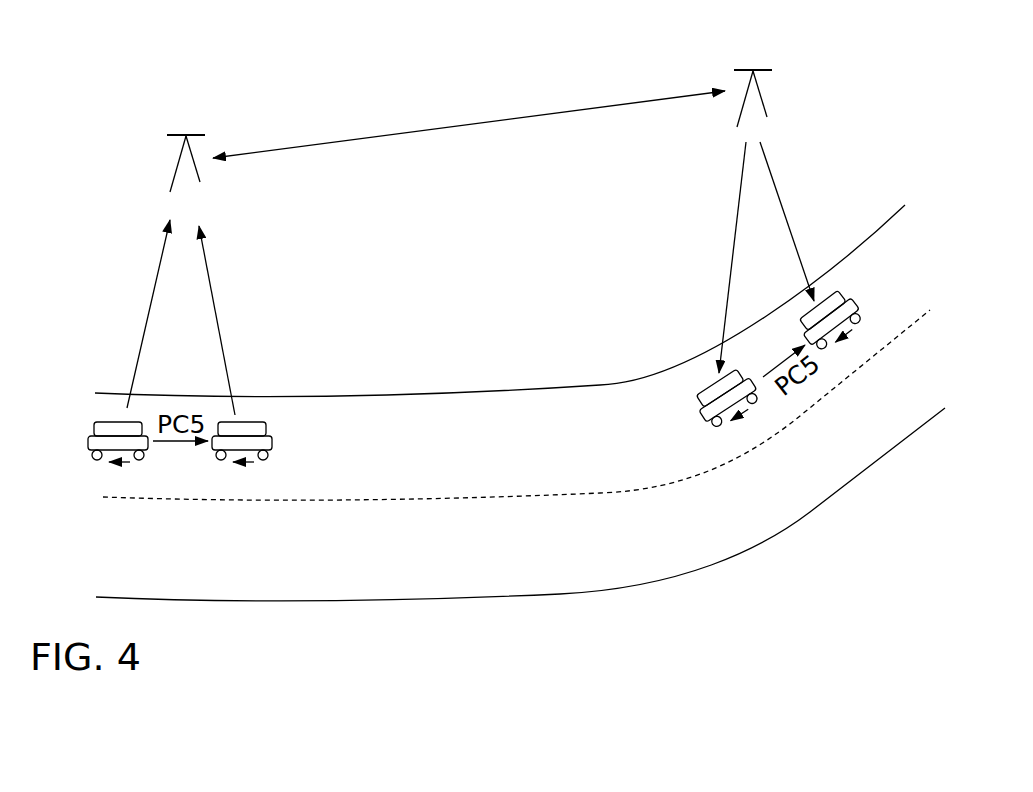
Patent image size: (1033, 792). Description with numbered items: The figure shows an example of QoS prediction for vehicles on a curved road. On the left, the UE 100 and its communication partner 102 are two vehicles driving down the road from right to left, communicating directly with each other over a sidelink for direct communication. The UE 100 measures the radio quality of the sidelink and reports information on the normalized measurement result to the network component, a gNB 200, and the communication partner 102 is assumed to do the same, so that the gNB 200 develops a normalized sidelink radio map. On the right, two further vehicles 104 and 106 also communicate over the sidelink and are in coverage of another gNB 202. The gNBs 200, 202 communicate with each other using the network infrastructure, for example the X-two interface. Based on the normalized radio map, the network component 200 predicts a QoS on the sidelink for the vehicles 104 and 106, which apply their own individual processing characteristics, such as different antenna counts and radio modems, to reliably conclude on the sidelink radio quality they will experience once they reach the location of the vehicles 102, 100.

The UE 100 is at (272, 443).
The communication partner 102 is at (88, 445).
The vehicle 104 is at (703, 415).
The vehicle 106 is at (857, 302).
The gNB 200 is at (200, 185).
The gNB 202 is at (767, 118).